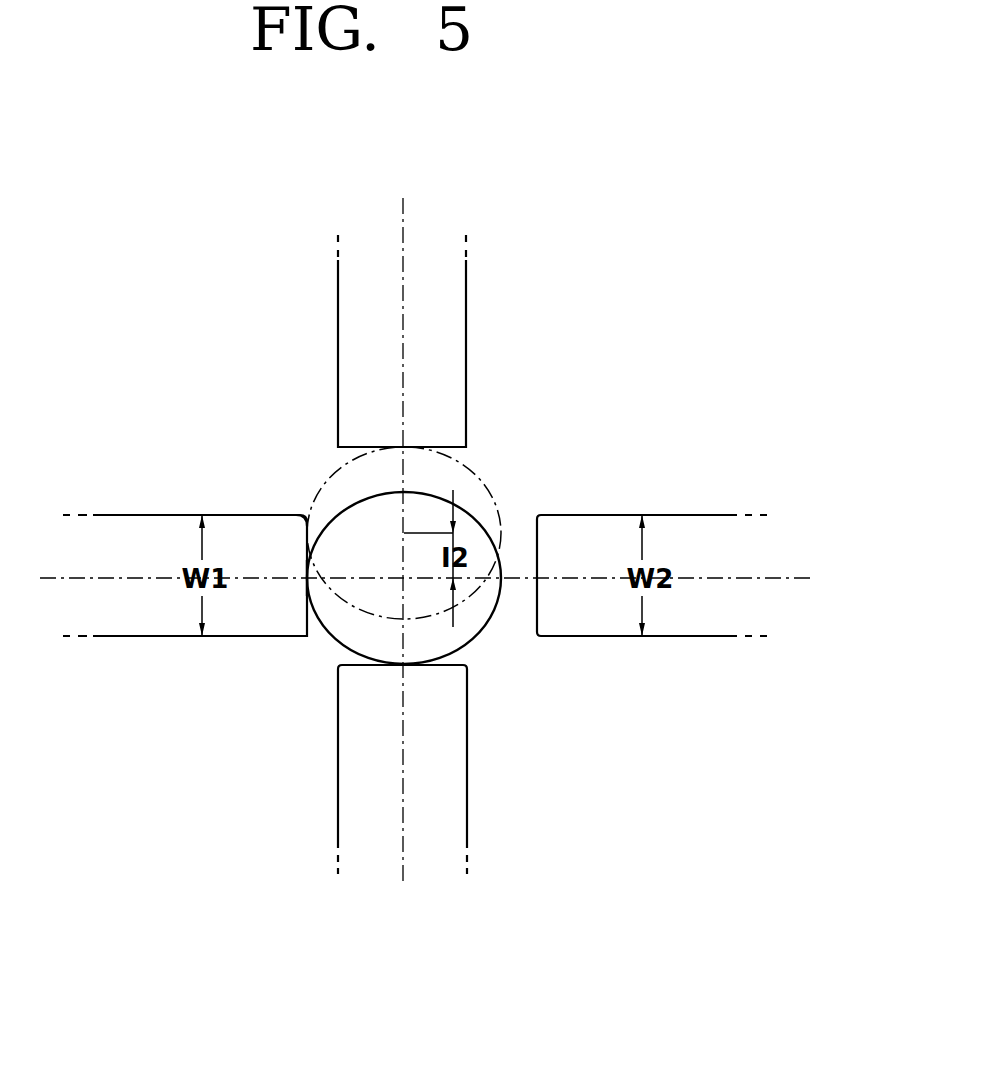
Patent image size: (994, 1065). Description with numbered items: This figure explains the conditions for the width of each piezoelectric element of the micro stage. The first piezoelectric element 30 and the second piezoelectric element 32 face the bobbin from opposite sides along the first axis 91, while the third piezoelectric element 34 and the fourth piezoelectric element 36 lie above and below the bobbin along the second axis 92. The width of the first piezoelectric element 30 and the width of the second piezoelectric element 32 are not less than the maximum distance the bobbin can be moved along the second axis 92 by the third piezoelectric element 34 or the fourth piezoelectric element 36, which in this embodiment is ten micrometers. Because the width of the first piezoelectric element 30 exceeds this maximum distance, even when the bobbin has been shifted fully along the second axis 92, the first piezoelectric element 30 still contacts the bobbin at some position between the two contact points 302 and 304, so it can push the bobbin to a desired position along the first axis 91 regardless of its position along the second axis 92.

The first piezoelectric element 30 is at (155, 613).
The second piezoelectric element 32 is at (698, 545).
The third piezoelectric element 34 is at (448, 320).
The fourth piezoelectric element 36 is at (442, 747).
The contact point 302 is at (306, 580).
The contact point 304 is at (302, 516).
The first axis 91 is at (767, 578).
The second axis 92 is at (403, 213).